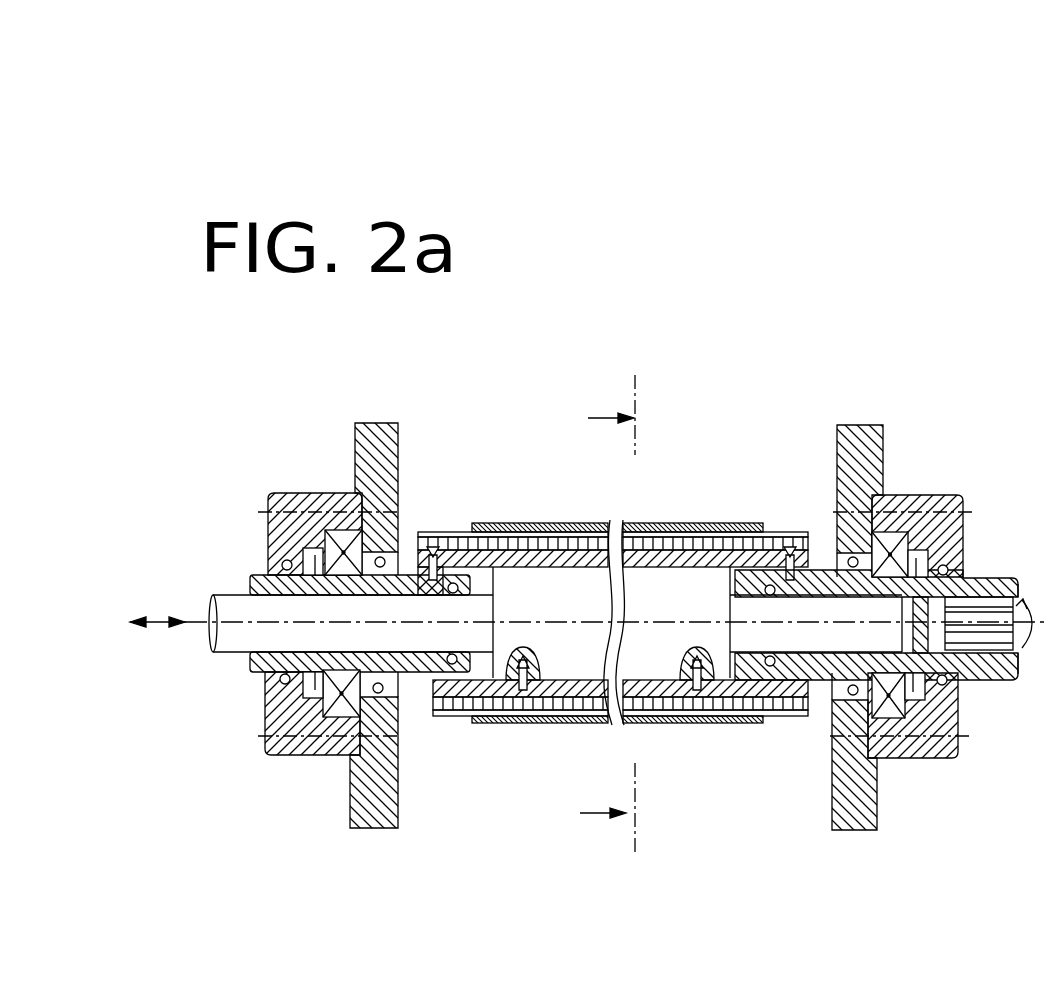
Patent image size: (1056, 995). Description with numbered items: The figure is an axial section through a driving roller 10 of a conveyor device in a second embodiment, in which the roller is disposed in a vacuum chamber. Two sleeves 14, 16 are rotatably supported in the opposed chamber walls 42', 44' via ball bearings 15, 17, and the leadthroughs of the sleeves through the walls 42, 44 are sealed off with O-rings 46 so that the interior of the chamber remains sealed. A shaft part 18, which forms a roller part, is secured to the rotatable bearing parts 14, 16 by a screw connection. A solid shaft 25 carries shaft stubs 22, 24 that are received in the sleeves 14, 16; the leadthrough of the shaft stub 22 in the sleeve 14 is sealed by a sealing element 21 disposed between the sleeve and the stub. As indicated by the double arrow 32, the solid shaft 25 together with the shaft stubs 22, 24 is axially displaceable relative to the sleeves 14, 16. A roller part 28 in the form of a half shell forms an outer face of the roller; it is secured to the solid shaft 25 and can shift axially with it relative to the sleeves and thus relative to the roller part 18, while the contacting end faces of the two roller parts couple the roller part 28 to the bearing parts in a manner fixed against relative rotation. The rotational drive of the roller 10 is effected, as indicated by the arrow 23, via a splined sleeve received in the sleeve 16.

The driving roller 10 is at (686, 463).
The sleeve 14 is at (248, 668).
The ball bearing 15 is at (340, 530).
The sleeve 16 is at (962, 745).
The ball bearing 17 is at (890, 530).
The shaft part 18 is at (513, 523).
The sealing element 21 is at (450, 645).
The shaft stub 22 is at (400, 603).
The drive end 23 is at (1002, 673).
The shaft stub 24 is at (822, 600).
The solid shaft 25 is at (617, 535).
The roller part 28 is at (668, 725).
The double arrow 32 is at (155, 615).
The side wall 42 is at (374, 625).
The chamber wall 42' is at (421, 584).
The side wall 44 is at (857, 627).
The chamber wall 44' is at (808, 585).
The O-ring 46 is at (268, 555).